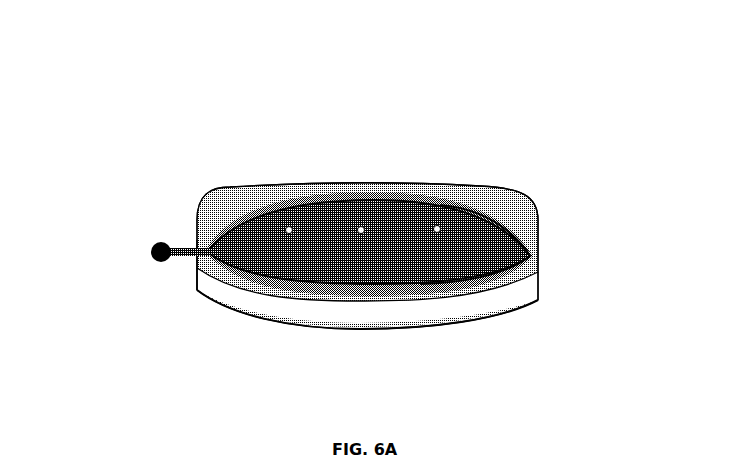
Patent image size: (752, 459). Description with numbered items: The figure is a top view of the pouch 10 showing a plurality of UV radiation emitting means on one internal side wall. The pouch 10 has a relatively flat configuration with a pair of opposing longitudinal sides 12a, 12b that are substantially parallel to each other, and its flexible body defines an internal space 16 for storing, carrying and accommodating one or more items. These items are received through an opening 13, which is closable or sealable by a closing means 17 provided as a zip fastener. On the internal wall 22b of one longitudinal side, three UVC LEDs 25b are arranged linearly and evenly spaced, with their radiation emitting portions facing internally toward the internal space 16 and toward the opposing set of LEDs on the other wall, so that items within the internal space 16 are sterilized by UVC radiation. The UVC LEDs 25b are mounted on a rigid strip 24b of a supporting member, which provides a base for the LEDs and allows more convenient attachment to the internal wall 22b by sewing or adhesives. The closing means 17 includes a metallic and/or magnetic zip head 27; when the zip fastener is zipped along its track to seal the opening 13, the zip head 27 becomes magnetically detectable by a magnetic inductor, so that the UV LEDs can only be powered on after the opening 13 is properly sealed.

The pouch 10 is at (154, 118).
The longitudinal side 12a is at (442, 313).
The longitudinal side 12b is at (216, 213).
The opening 13 is at (515, 275).
The internal space 16 is at (203, 272).
The closing means 17 is at (488, 222).
The internal wall 22b is at (420, 213).
The rigid strip 24b is at (392, 222).
The UVC LEDs 25b is at (436, 233).
The zip head 27 is at (150, 248).